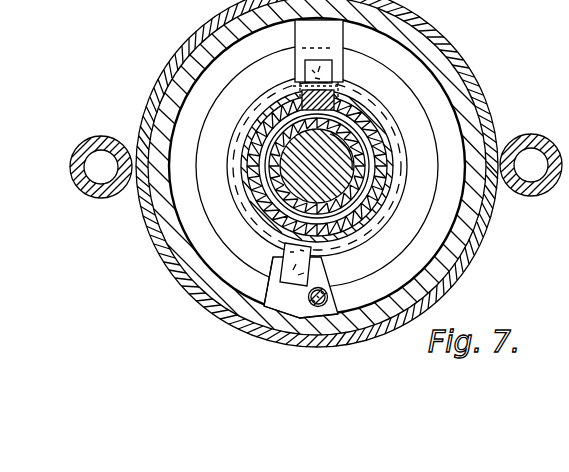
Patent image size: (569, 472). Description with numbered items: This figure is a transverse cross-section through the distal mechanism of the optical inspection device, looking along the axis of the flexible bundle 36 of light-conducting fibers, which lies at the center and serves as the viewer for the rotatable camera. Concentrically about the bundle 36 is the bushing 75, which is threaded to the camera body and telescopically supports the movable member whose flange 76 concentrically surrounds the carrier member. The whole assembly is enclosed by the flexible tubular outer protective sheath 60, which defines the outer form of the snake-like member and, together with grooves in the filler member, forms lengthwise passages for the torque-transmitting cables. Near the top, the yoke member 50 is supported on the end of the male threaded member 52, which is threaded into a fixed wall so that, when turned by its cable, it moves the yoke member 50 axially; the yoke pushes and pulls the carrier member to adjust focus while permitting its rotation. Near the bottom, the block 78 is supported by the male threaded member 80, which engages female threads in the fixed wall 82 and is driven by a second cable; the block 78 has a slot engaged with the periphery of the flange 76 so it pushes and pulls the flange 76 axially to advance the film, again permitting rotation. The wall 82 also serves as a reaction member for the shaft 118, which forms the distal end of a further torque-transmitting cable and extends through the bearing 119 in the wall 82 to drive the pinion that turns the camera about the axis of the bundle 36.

The flexible bundle of light-conducting fibers 36 is at (357, 152).
The yoke member 50 is at (335, 74).
The male threaded member 52 is at (298, 50).
The flexible tubular outer protective sheath 60 is at (458, 68).
The bushing 75 is at (385, 162).
The flange 76 is at (362, 105).
The block 78 is at (279, 253).
The male threaded member 80 is at (271, 280).
The fixed wall 82 is at (326, 266).
The shaft 118 is at (310, 302).
The bearing 119 is at (333, 298).